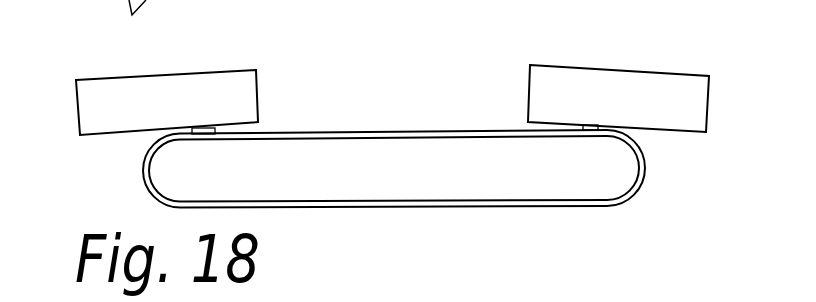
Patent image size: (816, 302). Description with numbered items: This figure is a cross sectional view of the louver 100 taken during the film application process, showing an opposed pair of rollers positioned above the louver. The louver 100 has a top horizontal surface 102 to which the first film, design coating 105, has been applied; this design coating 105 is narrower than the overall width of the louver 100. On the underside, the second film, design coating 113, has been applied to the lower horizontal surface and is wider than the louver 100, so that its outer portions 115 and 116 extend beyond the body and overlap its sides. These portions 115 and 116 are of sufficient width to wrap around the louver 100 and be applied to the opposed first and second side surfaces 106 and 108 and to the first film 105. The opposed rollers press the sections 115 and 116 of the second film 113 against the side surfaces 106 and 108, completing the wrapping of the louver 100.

The louver 100 is at (440, 162).
The top horizontal surface 102 is at (392, 139).
The design coating 105 is at (313, 133).
The first side surface 106 is at (152, 178).
The second side surface 108 is at (637, 160).
The design coating 113 is at (438, 208).
The portion of design coating 115 is at (148, 150).
The portion of design coating 116 is at (637, 145).